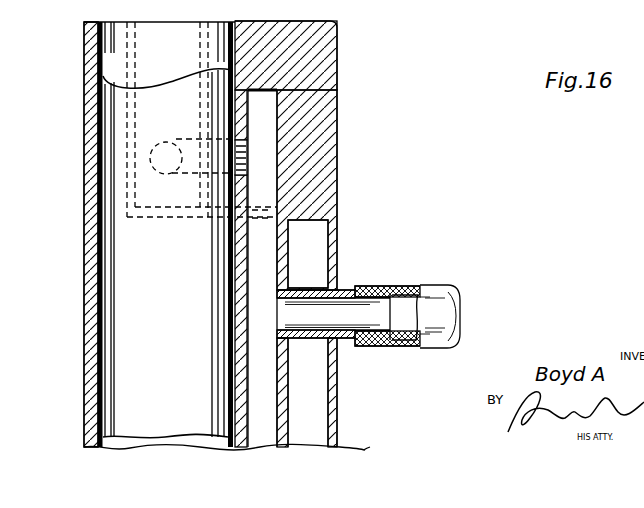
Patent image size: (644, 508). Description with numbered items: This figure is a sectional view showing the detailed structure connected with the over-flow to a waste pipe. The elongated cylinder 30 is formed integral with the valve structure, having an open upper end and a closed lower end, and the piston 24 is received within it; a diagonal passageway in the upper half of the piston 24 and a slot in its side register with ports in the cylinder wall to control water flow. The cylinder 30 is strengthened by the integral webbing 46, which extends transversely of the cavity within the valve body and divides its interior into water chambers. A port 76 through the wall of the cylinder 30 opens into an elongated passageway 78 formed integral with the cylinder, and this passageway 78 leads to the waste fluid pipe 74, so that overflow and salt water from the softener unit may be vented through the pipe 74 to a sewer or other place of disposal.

The piston 24 is at (138, 303).
The cylinder 30 is at (106, 359).
The webbing 46 is at (312, 70).
The waste fluid pipe 74 is at (440, 303).
The port 76 is at (242, 157).
The passageway 78 is at (267, 193).